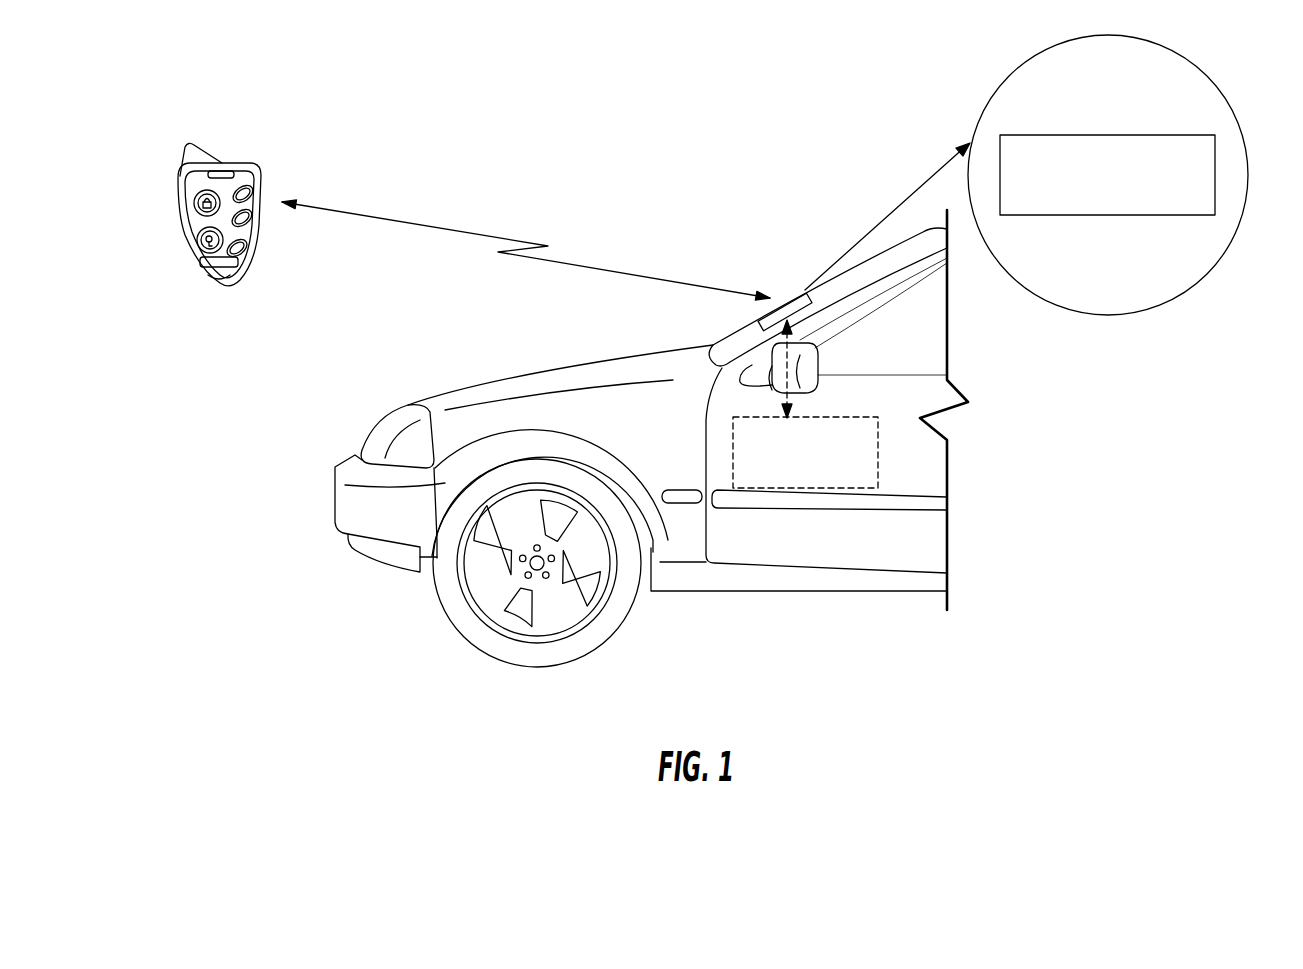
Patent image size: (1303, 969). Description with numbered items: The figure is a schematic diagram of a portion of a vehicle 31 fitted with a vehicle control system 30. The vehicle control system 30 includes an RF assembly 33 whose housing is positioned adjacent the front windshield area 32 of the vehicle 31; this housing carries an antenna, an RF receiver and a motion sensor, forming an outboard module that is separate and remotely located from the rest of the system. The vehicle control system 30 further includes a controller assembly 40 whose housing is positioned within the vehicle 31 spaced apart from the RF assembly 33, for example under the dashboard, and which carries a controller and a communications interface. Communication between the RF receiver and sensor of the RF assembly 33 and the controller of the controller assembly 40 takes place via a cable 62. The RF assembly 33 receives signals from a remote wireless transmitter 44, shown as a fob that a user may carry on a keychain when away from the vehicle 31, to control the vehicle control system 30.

The vehicle control system 30 is at (1106, 491).
The vehicle 31 is at (370, 564).
The front windshield area 32 is at (788, 256).
The RF assembly 33 is at (1205, 128).
The controller assembly 40 is at (880, 473).
The remote wireless transmitter 44 is at (180, 208).
The cable 62 is at (792, 372).